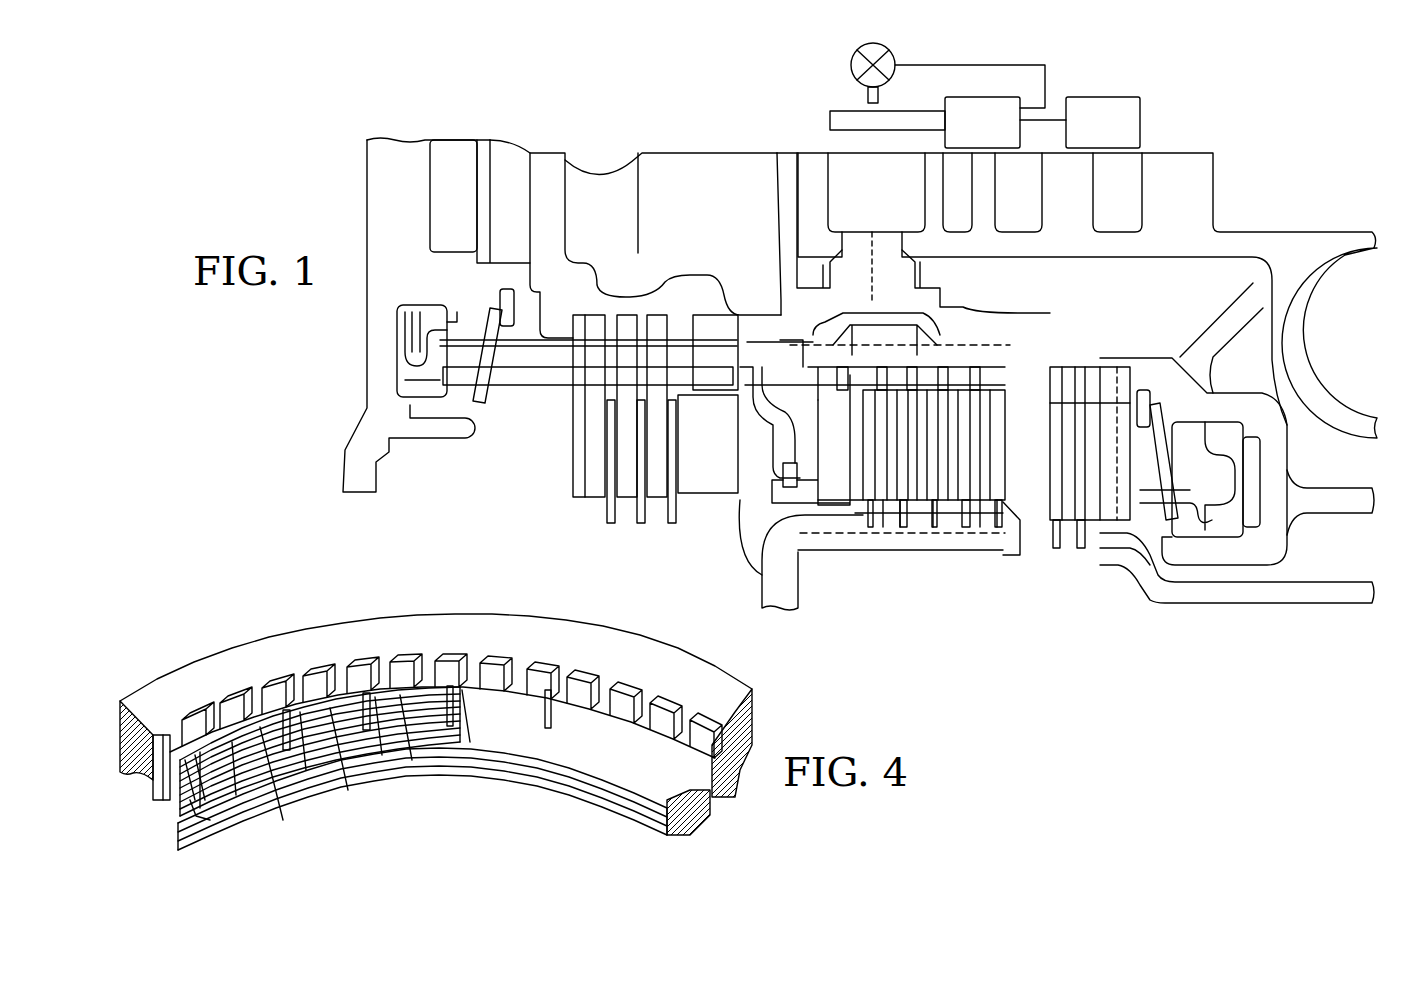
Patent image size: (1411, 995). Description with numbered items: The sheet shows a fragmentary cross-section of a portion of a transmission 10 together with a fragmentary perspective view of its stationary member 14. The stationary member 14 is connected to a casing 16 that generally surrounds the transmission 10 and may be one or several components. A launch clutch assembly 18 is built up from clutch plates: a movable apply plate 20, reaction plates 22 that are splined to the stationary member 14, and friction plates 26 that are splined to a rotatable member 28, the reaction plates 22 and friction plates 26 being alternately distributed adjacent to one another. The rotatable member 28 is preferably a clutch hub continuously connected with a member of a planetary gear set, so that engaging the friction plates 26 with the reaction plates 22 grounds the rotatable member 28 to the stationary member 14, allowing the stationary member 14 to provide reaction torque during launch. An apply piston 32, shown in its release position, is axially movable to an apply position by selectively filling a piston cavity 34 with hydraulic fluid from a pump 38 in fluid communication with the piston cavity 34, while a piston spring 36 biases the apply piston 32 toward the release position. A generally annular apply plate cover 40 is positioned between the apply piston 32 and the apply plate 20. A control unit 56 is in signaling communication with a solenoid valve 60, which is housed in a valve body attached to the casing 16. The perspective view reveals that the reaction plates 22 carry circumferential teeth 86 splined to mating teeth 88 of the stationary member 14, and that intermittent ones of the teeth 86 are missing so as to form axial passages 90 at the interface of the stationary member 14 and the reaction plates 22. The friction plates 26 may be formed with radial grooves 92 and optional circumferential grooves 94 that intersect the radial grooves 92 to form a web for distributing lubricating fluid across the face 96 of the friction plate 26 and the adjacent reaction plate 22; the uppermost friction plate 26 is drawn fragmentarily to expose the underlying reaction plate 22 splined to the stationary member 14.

In FIG. 1, the transmission 10 is at (1310, 152).
In FIG. 1, the stationary member 14 is at (1045, 352).
In FIG. 4, the stationary member 14 is at (455, 612).
In FIG. 1, the casing 16 is at (1175, 288).
In FIG. 1, the clutch assembly 18 is at (1012, 600).
In FIG. 1, the movable apply plate 20 is at (768, 487).
In FIG. 1, the reaction plates 22 is at (917, 412).
In FIG. 4, the reaction plates 22 is at (652, 790).
In FIG. 1, the friction plates 26 is at (997, 528).
In FIG. 4, the friction plates 26 is at (196, 810).
In FIG. 1, the rotatable member 28 is at (764, 577).
In FIG. 1, the apply piston 32 is at (520, 388).
In FIG. 1, the piston cavity 34 is at (412, 405).
In FIG. 1, the piston spring 36 is at (483, 322).
In FIG. 1, the pump 38 is at (851, 62).
In FIG. 1, the apply plate cover 40 is at (762, 425).
In FIG. 1, the control unit 56 is at (1103, 122).
In FIG. 1, the solenoid valve 60 is at (1005, 122).
In FIG. 4, the circumferential teeth 86 is at (266, 782).
In FIG. 4, the mating teeth 88 is at (618, 703).
In FIG. 4, the axial passages 90 is at (677, 723).
In FIG. 4, the radial grooves 92 is at (455, 770).
In FIG. 4, the circumferential grooves 94 is at (240, 785).
In FIG. 4, the face 96 is at (468, 742).